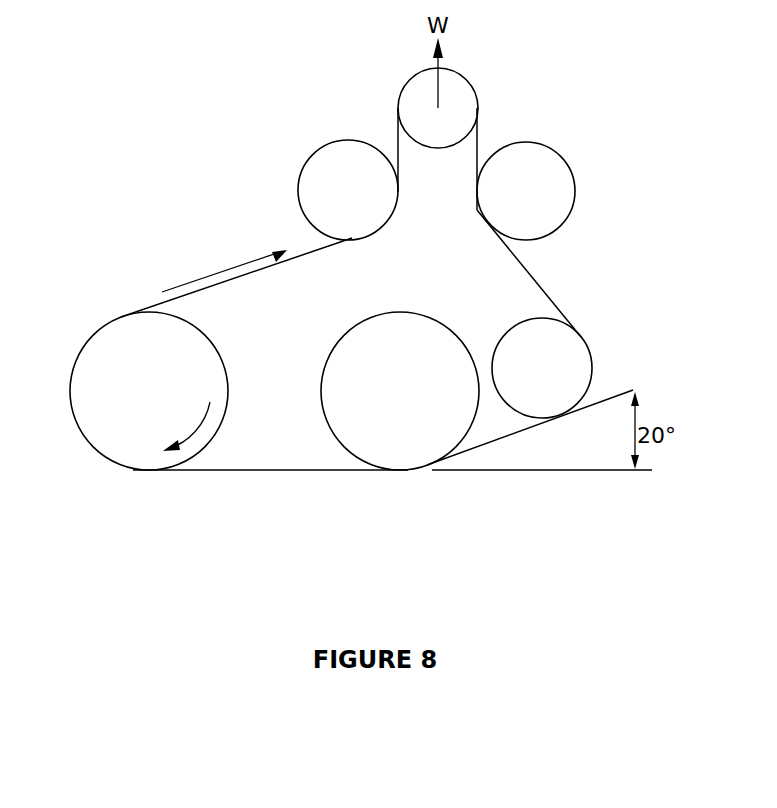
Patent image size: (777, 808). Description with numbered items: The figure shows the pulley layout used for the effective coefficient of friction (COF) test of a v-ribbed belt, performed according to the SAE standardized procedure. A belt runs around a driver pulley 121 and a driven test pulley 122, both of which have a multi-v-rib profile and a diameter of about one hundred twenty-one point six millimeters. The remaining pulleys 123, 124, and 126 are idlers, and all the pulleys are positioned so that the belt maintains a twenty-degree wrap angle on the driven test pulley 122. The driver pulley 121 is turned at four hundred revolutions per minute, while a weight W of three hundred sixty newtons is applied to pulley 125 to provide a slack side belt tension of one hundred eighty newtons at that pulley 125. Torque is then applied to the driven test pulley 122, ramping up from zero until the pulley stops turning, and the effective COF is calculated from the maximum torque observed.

The driver pulley 121 is at (85, 437).
The driven test pulley 122 is at (408, 472).
The idler pulley 123 is at (592, 358).
The idler pulley 124 is at (535, 141).
The pulley 125 is at (457, 74).
The idler pulley 126 is at (340, 140).